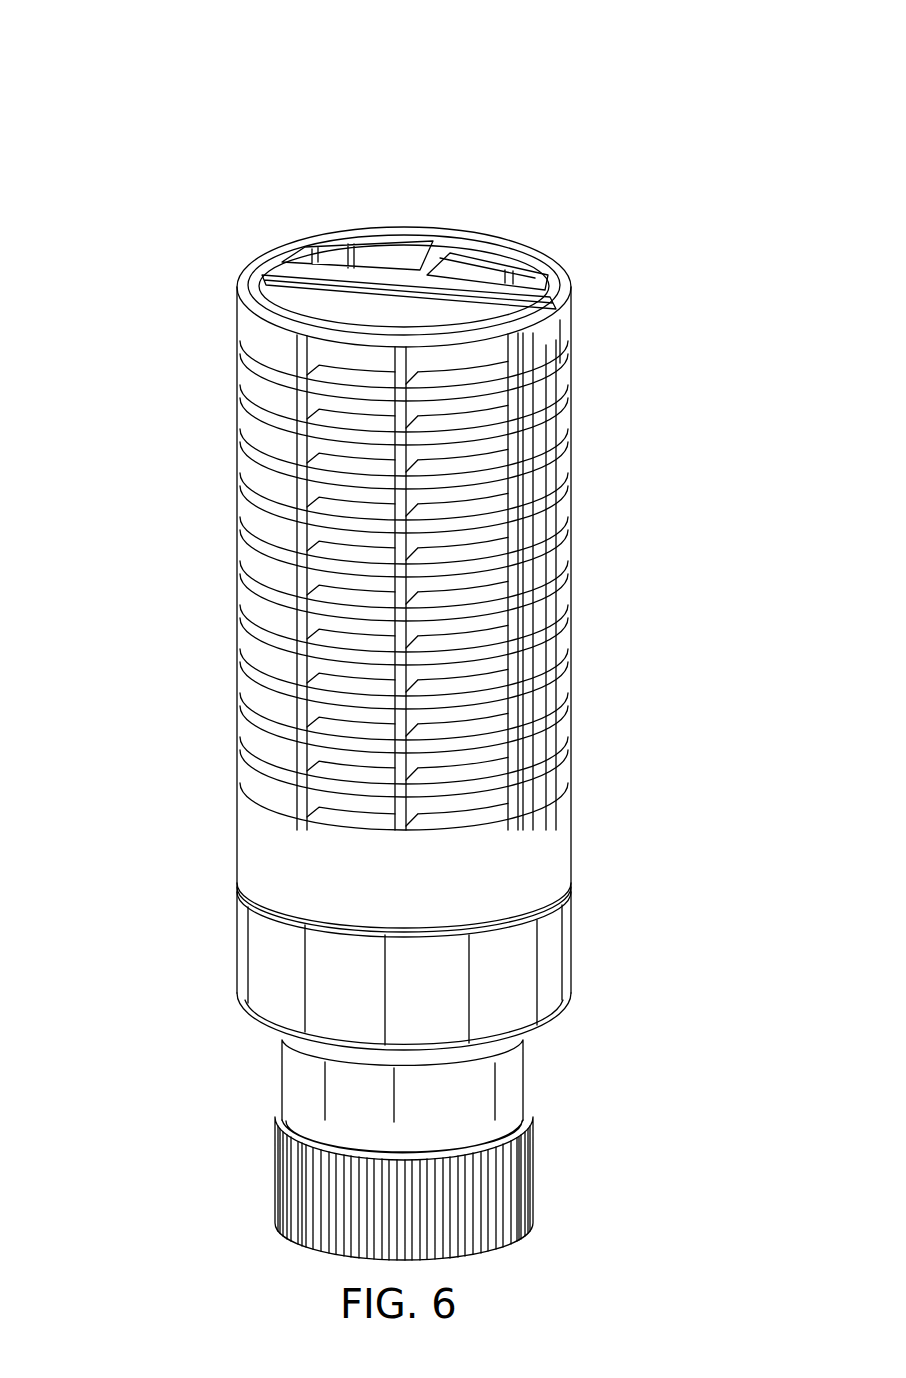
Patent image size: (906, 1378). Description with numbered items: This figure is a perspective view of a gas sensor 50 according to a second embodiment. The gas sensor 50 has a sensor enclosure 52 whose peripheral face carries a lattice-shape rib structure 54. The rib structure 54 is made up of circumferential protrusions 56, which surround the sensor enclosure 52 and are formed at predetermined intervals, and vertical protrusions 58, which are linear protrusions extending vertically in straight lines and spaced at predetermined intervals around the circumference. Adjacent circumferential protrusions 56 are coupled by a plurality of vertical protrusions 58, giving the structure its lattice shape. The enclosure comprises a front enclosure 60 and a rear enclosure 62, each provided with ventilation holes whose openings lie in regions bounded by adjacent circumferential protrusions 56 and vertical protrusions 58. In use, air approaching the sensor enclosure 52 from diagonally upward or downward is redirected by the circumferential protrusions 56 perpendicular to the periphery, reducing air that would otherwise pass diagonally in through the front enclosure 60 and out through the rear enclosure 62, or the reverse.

The gas sensor 50 is at (240, 113).
The sensor enclosure 52 is at (603, 373).
The lattice-shape rib structure 54 is at (475, 716).
The circumferential protrusions 56 is at (247, 683).
The vertical protrusions 58 is at (318, 480).
The front enclosure 60 is at (237, 882).
The rear enclosure 62 is at (502, 250).